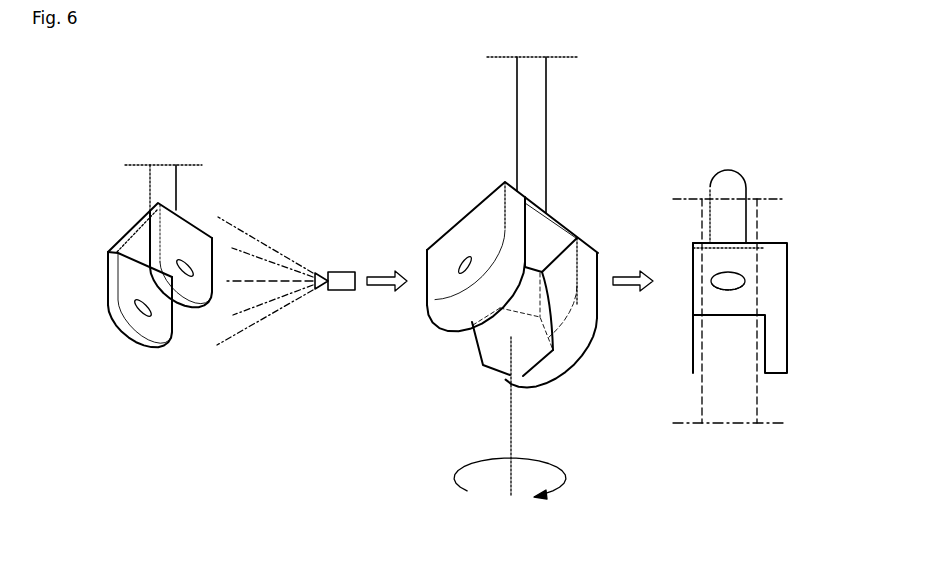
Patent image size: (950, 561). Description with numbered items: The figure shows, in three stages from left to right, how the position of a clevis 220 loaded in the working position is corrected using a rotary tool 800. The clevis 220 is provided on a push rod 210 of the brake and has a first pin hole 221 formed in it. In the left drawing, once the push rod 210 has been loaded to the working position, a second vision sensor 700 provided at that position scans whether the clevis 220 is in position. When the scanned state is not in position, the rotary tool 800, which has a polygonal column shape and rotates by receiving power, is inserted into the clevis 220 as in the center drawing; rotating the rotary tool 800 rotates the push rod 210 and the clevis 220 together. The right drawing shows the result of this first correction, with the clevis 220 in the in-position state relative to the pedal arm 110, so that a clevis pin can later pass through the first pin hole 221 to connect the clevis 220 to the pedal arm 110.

The pedal arm 110 is at (757, 402).
The push rod 210 is at (162, 188).
The clevis 220 is at (108, 281).
The first pin hole 221 is at (190, 268).
The second vision sensor 700 is at (343, 272).
The rotary tool 800 is at (488, 357).